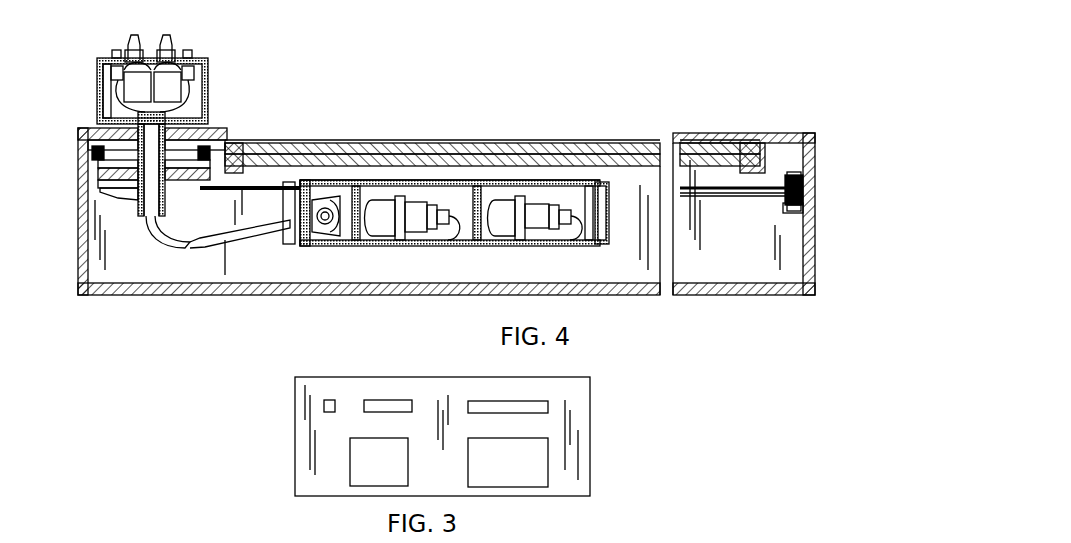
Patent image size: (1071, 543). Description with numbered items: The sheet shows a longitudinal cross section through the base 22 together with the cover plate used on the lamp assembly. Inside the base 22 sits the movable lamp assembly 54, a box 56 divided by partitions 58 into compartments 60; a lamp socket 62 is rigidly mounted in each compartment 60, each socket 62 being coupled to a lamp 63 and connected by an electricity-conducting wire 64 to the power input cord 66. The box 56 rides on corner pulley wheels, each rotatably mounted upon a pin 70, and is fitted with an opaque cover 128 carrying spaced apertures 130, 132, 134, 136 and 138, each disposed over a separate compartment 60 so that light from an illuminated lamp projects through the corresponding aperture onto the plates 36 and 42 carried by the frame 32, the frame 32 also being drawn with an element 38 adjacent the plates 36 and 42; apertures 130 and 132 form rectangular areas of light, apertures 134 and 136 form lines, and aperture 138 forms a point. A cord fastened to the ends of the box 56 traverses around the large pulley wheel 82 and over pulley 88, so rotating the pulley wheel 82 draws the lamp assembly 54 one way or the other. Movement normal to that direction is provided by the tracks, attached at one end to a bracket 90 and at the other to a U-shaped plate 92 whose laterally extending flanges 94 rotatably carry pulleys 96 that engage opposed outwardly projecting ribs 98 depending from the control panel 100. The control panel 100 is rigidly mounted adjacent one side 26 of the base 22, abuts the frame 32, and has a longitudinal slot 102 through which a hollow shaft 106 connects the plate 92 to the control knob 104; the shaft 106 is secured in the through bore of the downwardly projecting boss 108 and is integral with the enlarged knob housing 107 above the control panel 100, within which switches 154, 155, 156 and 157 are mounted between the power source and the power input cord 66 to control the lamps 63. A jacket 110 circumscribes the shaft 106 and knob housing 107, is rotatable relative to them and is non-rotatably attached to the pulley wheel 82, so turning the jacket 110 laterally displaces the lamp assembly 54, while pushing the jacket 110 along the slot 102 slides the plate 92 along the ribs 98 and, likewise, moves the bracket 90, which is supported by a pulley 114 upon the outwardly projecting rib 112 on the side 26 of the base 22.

In FIG. 4, the base 22 is at (760, 295).
In FIG. 4, the side 26 is at (78, 230).
In FIG. 4, the frame 32 is at (798, 130).
In FIG. 4, the plate 36 is at (455, 140).
In FIG. 4, the bracket 38 is at (243, 170).
In FIG. 4, the plate 42 is at (397, 140).
In FIG. 4, the lamp assembly 54 is at (355, 255).
In FIG. 4, the box 56 is at (534, 228).
In FIG. 4, the partition 58 is at (470, 205).
In FIG. 4, the compartment 60 is at (588, 230).
In FIG. 4, the lamp socket 62 is at (420, 225).
In FIG. 4, the lamp 63 is at (388, 222).
In FIG. 4, the electricity-conducting wire 64 is at (458, 240).
In FIG. 4, the power input cord 66 is at (205, 247).
In FIG. 4, the pin 70 is at (285, 232).
In FIG. 4, the pulley wheel 82 is at (98, 180).
In FIG. 4, the pulley 88 is at (803, 186).
In FIG. 4, the bracket 90 is at (785, 200).
In FIG. 4, the plate 92 is at (100, 192).
In FIG. 4, the flange 94 is at (98, 162).
In FIG. 4, the pulley 96 is at (90, 130).
In FIG. 4, the rib 98 is at (92, 152).
In FIG. 4, the control panel 100 is at (80, 132).
In FIG. 4, the longitudinal slot 102 is at (208, 112).
In FIG. 4, the control knob 104 is at (215, 60).
In FIG. 4, the hollow shaft 106 is at (142, 216).
In FIG. 4, the knob housing 107 is at (100, 70).
In FIG. 4, the boss 108 is at (165, 205).
In FIG. 4, the jacket 110 is at (208, 80).
In FIG. 4, the rib 112 is at (803, 208).
In FIG. 4, the pulley 114 is at (785, 210).
In FIG. 4, the cover 128 is at (465, 178).
In FIG. 3, the cover 128 is at (598, 432).
In FIG. 3, the aperture 130 is at (495, 487).
In FIG. 3, the aperture 132 is at (350, 478).
In FIG. 3, the aperture 134 is at (514, 401).
In FIG. 3, the aperture 136 is at (398, 400).
In FIG. 3, the aperture 138 is at (329, 400).
In FIG. 4, the switch 154 is at (130, 36).
In FIG. 4, the switch 155 is at (168, 36).
In FIG. 4, the switch 156 is at (192, 52).
In FIG. 4, the switch 157 is at (112, 54).